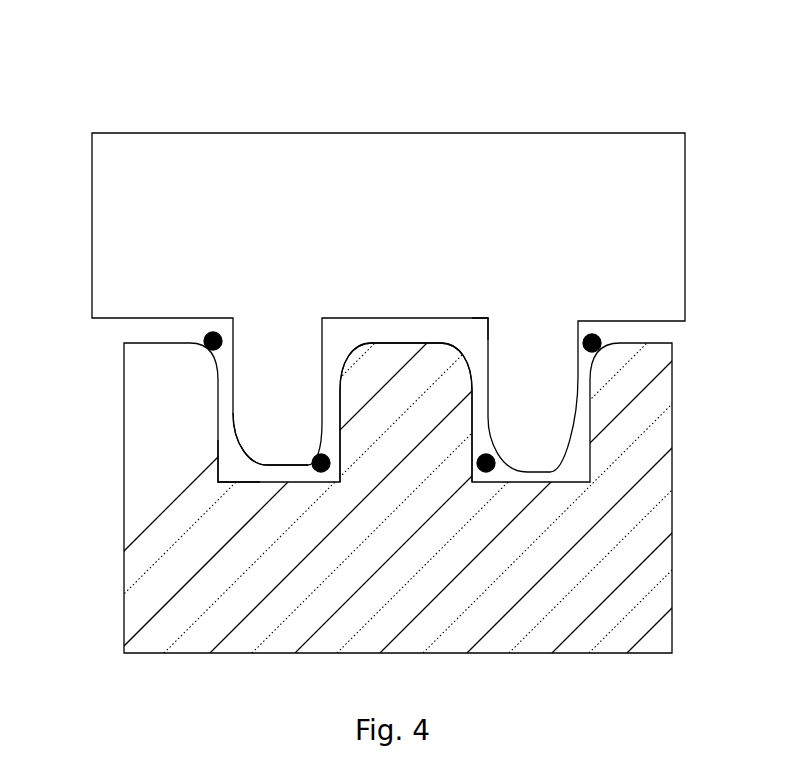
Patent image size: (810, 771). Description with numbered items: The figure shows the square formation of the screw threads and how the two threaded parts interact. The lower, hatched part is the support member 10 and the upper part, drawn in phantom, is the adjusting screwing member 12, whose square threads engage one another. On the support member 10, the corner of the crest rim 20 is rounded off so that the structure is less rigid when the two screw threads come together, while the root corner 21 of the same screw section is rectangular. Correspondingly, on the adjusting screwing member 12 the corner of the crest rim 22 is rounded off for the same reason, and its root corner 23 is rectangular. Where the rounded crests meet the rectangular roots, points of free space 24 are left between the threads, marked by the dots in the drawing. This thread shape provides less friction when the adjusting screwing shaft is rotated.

The support member 10 is at (416, 498).
The adjusting screwing member 12 is at (388, 302).
The crest rim 20 is at (355, 348).
The root corner 21 is at (218, 480).
The crest rim 22 is at (255, 463).
The root corner 23 is at (492, 317).
The points of free space 24 is at (497, 472).